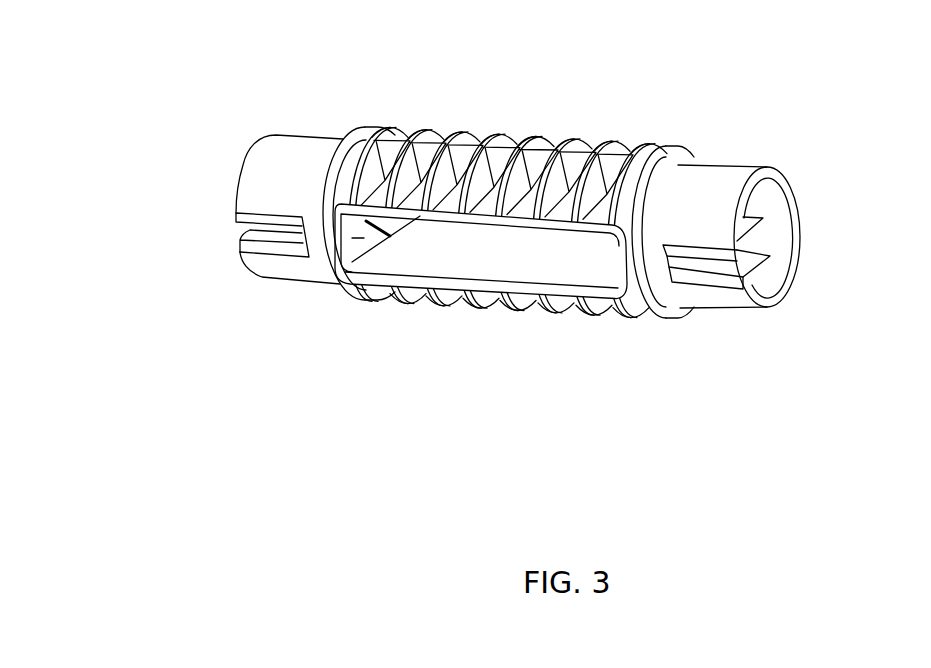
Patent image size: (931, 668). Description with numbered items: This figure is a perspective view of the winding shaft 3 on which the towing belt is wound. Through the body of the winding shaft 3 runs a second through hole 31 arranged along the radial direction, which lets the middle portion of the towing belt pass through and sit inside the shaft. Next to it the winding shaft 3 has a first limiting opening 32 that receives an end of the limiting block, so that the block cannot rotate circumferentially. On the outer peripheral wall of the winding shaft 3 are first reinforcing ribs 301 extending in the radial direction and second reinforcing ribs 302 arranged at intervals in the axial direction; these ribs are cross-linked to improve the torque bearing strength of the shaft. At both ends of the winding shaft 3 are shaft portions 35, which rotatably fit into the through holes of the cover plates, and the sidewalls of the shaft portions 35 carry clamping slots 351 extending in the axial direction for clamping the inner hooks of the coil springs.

The winding shaft 3 is at (160, 319).
The second through hole 31 is at (512, 267).
The first limiting opening 32 is at (368, 230).
The shaft portion 35 is at (322, 162).
The first reinforcing rib 301 is at (585, 148).
The second reinforcing rib 302 is at (502, 142).
The clamping slot 351 is at (280, 238).